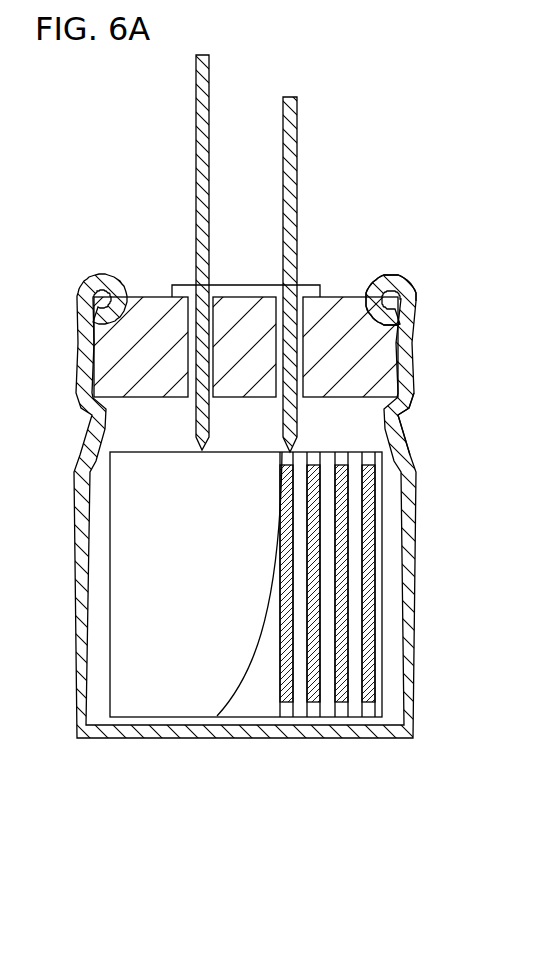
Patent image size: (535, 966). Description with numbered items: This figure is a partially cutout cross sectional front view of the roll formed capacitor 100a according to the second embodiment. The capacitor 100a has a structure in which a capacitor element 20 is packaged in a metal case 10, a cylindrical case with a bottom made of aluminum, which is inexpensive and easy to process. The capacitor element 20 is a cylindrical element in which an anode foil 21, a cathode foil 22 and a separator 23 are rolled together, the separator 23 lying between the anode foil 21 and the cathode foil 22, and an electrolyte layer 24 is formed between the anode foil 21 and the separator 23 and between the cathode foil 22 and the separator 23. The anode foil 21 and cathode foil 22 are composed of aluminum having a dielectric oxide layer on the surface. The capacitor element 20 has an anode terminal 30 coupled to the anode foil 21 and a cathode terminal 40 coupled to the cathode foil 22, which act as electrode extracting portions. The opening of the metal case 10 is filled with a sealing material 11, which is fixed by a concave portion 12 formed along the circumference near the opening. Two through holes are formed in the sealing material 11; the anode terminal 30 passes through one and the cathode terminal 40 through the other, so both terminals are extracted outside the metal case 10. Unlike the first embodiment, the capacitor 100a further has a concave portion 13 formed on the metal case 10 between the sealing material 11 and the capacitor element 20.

The capacitor 100a is at (350, 182).
The metal case 10 is at (410, 400).
The sealing material 11 is at (157, 307).
The concave portion 12 is at (409, 346).
The concave portion 13 is at (405, 421).
The capacitor element 20 is at (170, 708).
The anode foil 21 is at (323, 713).
The cathode foil 22 is at (295, 713).
The separator 23 is at (255, 713).
The electrolyte layer 24 is at (310, 713).
The anode terminal 30 is at (196, 150).
The cathode terminal 40 is at (283, 155).